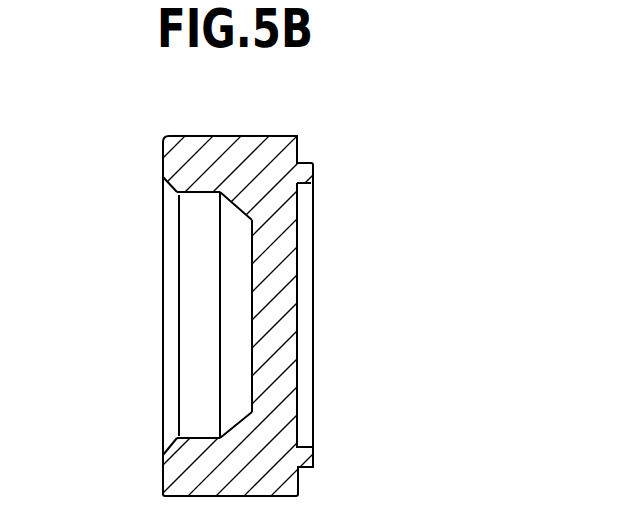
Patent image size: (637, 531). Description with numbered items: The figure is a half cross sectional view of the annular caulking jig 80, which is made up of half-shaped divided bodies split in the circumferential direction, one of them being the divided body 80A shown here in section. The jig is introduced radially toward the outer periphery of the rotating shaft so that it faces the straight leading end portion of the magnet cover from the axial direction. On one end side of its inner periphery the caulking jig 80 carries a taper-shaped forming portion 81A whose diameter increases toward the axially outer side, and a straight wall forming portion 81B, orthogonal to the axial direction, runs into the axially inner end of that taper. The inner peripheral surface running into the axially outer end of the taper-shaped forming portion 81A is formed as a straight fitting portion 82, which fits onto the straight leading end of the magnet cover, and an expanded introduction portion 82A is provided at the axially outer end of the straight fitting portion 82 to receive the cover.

The caulking jig 80 is at (178, 135).
The divided body 80A is at (167, 164).
The expanded introduction portion 82A is at (163, 193).
The straight fitting portion 82 is at (197, 194).
The taper-shaped forming portion 81A is at (241, 210).
The straight wall forming portion 81B is at (252, 223).